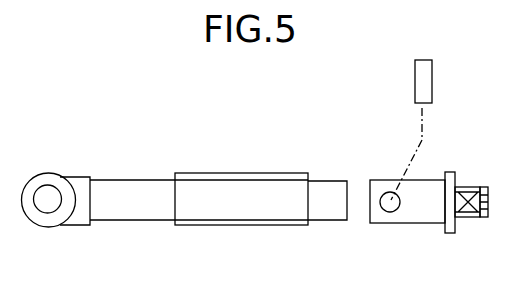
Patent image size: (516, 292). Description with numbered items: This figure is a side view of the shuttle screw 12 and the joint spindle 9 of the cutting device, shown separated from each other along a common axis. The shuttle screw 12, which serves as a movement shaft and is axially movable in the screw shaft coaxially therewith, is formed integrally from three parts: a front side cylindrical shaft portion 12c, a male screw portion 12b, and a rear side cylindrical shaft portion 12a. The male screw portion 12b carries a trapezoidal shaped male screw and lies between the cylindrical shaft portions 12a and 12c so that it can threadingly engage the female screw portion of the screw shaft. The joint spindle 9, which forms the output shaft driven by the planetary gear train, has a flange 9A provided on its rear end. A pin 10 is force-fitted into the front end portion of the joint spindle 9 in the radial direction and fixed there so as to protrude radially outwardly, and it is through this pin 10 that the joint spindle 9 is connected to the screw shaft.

The shuttle screw 12 is at (190, 162).
The rear side cylindrical shaft portion 12a is at (328, 195).
The male screw portion 12b is at (240, 192).
The front side cylindrical shaft portion 12c is at (135, 195).
The pin 10 is at (438, 75).
The joint spindle 9 is at (423, 217).
The flange 9A is at (450, 172).